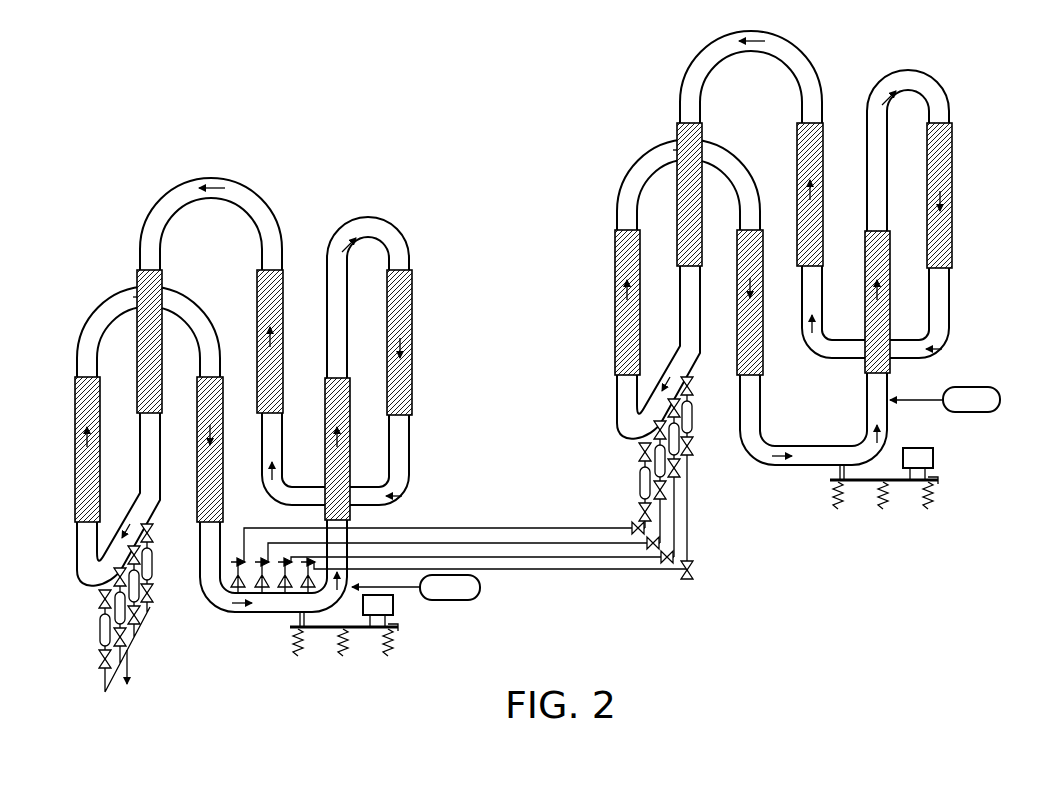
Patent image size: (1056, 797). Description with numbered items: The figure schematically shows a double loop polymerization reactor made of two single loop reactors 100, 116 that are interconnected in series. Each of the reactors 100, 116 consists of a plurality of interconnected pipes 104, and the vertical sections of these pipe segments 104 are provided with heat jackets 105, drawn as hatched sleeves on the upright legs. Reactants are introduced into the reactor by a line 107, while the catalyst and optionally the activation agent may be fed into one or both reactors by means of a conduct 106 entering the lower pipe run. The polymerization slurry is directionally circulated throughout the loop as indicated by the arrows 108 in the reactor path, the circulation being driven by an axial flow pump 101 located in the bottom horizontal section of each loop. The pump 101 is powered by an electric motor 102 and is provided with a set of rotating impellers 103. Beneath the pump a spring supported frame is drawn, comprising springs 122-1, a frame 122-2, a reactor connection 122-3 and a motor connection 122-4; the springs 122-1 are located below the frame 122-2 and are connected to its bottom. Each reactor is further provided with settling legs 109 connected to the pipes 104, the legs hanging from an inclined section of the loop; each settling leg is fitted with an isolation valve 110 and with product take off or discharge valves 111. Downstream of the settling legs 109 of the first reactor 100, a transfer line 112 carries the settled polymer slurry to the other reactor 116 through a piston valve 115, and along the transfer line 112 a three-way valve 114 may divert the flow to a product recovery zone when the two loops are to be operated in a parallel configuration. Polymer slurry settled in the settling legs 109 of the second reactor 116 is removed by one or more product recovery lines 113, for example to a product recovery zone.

The single loop reactor 100 is at (991, 97).
The axial flow pump 101 is at (345, 630).
The electric motor 102 is at (393, 605).
The rotating impellers 103 is at (292, 613).
The interconnected pipes 104 is at (410, 446).
The heat jackets 105 is at (413, 350).
The conduct 106 is at (272, 591).
The line 107 is at (480, 590).
The arrows 108 is at (355, 238).
The settling legs 109 is at (100, 620).
The isolation valve 110 is at (151, 531).
The product take off or discharge valves 111 is at (151, 593).
The transfer line 112 is at (506, 524).
The product recovery lines 113 is at (130, 682).
The three-way valve 114 is at (688, 558).
The piston valve 115 is at (238, 563).
The single loop reactor 116 is at (453, 231).
The springs 122-1 is at (395, 650).
The frame 122-2 is at (398, 630).
The reactor connection 122-3 is at (296, 642).
The motor connection 122-4 is at (388, 642).